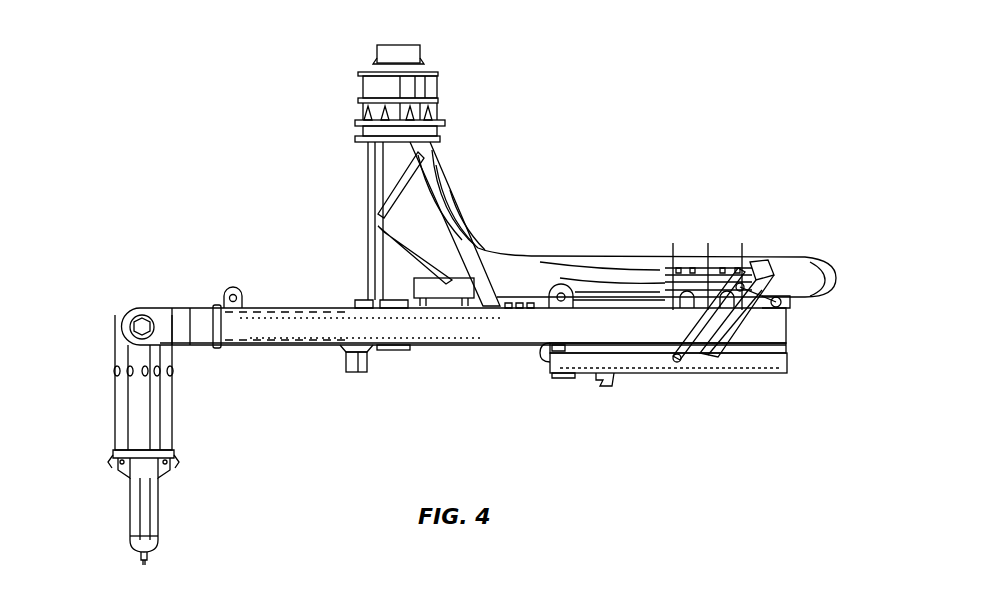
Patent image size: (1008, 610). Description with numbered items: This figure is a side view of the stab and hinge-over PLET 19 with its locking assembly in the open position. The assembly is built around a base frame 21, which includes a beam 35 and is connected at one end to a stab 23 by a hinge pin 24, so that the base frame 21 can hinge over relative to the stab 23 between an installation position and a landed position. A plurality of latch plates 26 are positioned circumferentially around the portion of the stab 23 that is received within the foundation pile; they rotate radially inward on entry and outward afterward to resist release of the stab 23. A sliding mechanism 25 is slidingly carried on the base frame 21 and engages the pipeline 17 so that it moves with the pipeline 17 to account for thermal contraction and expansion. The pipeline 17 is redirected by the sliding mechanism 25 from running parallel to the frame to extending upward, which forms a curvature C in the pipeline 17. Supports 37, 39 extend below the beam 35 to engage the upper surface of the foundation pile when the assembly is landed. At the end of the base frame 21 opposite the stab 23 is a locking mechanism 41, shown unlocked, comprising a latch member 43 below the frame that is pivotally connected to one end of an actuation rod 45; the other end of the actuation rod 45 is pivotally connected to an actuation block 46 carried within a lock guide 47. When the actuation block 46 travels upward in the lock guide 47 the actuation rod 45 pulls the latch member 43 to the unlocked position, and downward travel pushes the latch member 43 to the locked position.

The stab and hinge-over PLET 19 is at (618, 42).
The curvature C is at (430, 218).
The pipeline 17 is at (812, 266).
The sliding mechanism 25 is at (683, 255).
The base frame 21 is at (275, 302).
The hinge pin 24 is at (142, 318).
The stab 23 is at (115, 425).
The latch plates 26 is at (172, 460).
The beam 35 is at (292, 335).
The support 37 is at (352, 372).
The support 39 is at (553, 380).
The locking mechanism 41 is at (702, 376).
The latch member 43 is at (611, 386).
The actuation rod 45 is at (703, 343).
The actuation block 46 is at (770, 310).
The lock guide 47 is at (745, 322).